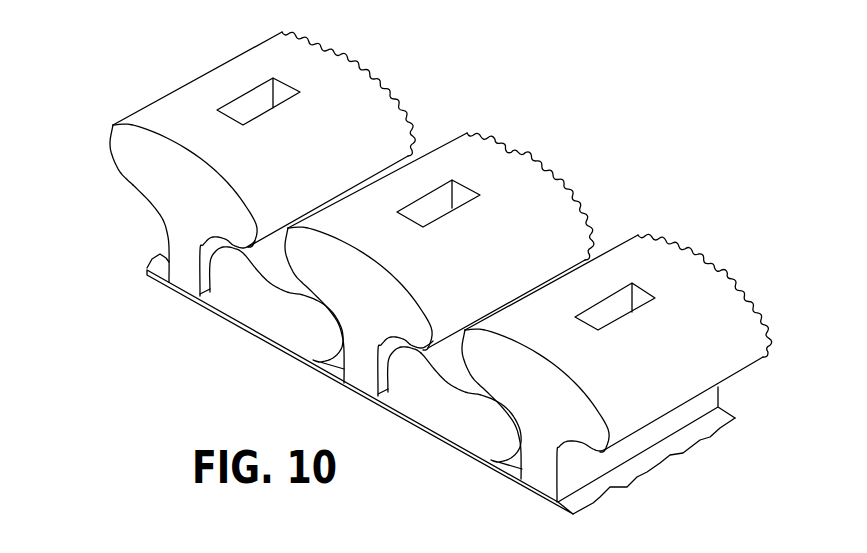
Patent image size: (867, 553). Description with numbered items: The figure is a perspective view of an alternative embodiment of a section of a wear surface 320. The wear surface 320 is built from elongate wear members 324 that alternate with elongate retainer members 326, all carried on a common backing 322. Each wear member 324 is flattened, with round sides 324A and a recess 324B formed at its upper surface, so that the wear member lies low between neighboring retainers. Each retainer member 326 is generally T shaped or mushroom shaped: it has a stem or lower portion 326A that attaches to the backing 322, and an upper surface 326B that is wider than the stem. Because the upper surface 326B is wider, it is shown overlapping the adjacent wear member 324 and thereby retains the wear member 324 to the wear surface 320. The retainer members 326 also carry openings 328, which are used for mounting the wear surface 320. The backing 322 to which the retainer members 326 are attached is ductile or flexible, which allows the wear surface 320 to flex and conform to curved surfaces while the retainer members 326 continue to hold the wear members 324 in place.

The wear surface 320 is at (510, 109).
The backing 322 is at (657, 472).
The wear member 324 is at (367, 354).
The round sides 324A is at (393, 344).
The recess 324B is at (479, 410).
The retainer member 326 is at (405, 282).
The stem or lower portion 326A is at (172, 250).
The upper surface 326B is at (118, 146).
The opening 328 is at (257, 107).